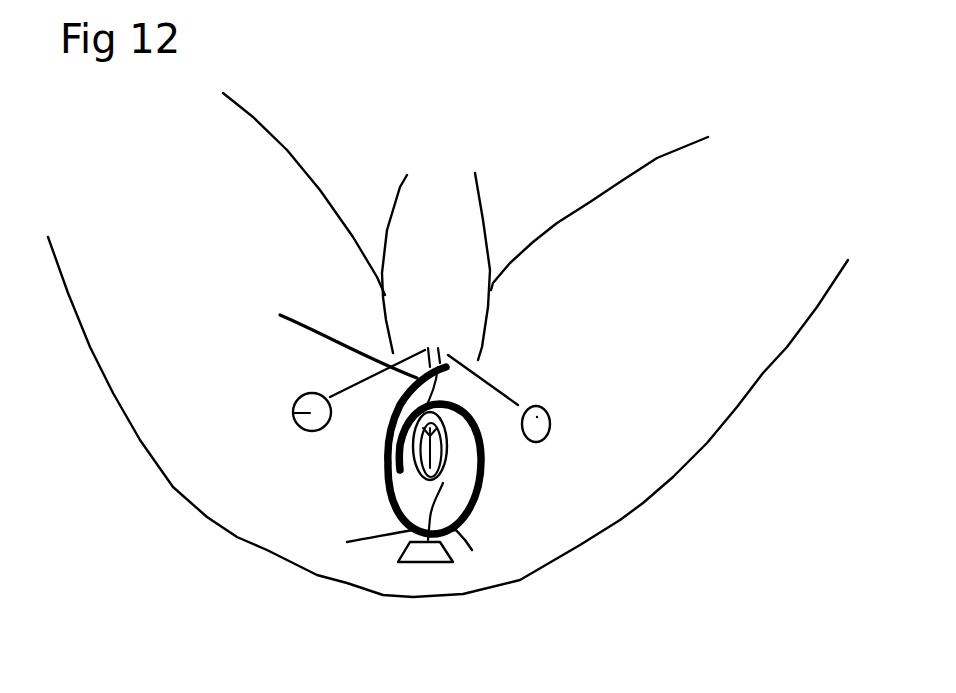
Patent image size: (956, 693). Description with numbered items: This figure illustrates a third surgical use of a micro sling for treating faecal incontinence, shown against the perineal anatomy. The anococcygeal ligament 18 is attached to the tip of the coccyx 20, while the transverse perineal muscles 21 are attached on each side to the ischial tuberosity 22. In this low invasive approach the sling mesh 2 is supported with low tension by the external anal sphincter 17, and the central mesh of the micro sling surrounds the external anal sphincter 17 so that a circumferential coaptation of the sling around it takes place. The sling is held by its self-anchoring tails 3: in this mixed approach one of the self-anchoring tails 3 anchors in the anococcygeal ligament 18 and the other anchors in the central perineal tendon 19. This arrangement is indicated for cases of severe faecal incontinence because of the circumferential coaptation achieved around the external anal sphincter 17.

The sling mesh 2 is at (480, 465).
The self-anchoring tails 3 is at (389, 432).
The external anal sphincter 17 is at (457, 447).
The anococcygeal ligament 18 is at (437, 514).
The central perineal tendon 19 is at (425, 363).
The coccyx 20 is at (420, 552).
The transverse perineal muscles 21 is at (347, 387).
The ischial tuberosity 22 is at (293, 415).